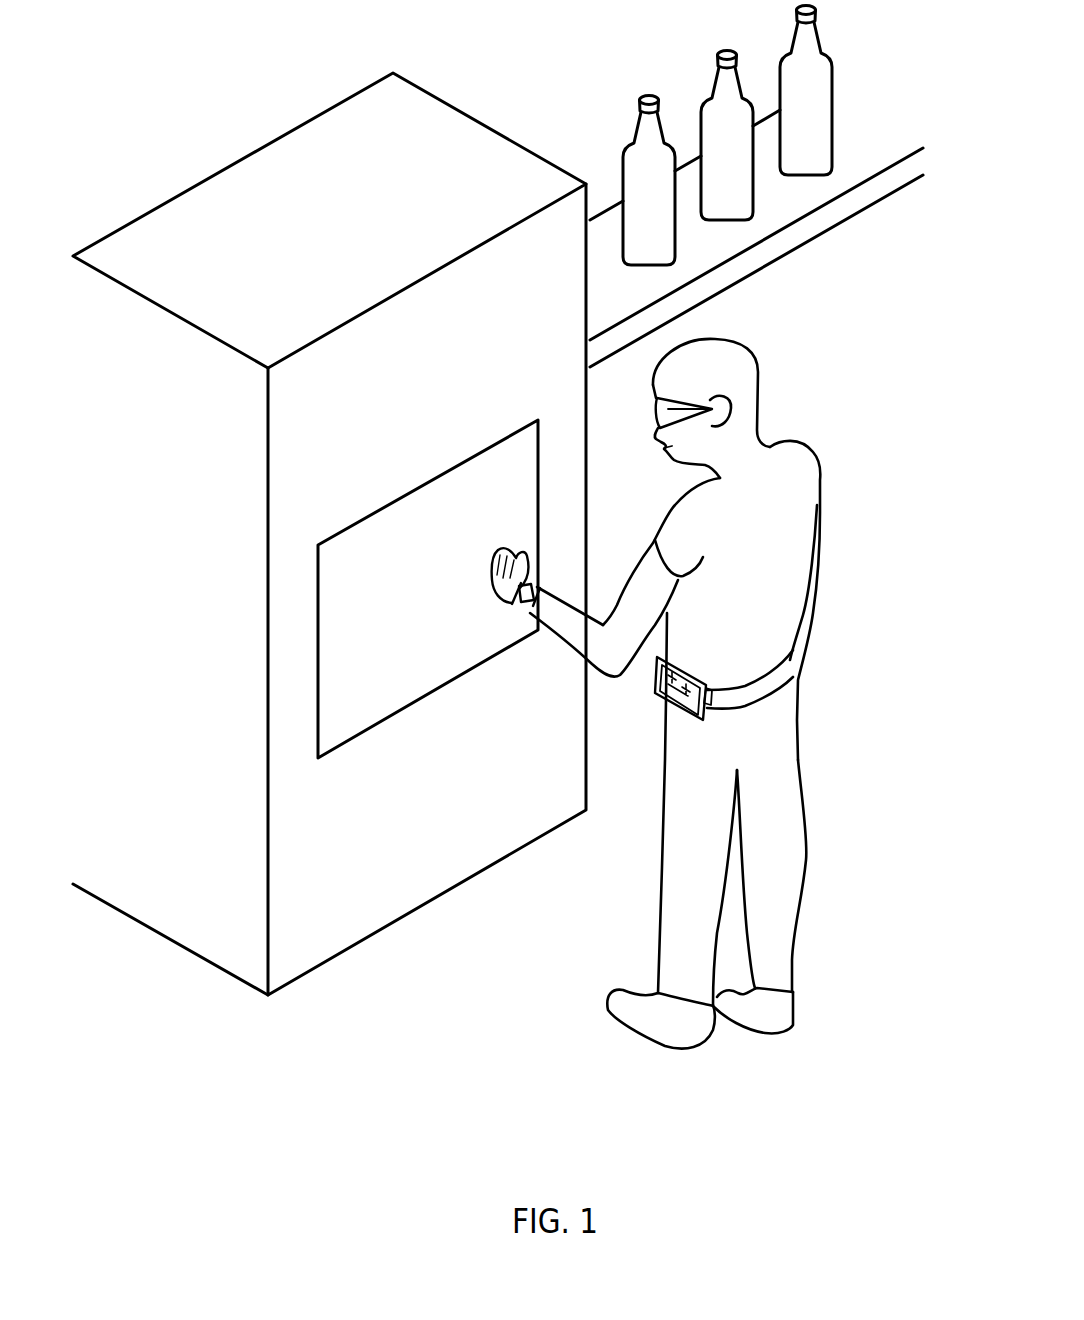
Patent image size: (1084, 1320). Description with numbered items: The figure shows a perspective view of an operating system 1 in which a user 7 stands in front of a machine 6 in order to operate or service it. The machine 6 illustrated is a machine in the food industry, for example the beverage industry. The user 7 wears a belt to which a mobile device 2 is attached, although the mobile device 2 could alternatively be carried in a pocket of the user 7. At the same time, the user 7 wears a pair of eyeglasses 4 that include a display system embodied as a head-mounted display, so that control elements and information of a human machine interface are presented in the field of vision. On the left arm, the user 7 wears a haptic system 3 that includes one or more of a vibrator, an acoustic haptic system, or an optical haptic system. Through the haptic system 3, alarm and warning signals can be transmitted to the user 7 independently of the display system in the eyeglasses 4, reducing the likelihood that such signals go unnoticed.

The operating system 1 is at (371, 1019).
The mobile device 2 is at (661, 703).
The haptic system 3 is at (513, 598).
The pair of eyeglasses 4 is at (687, 404).
The machine 6 is at (321, 405).
The user 7 is at (758, 535).